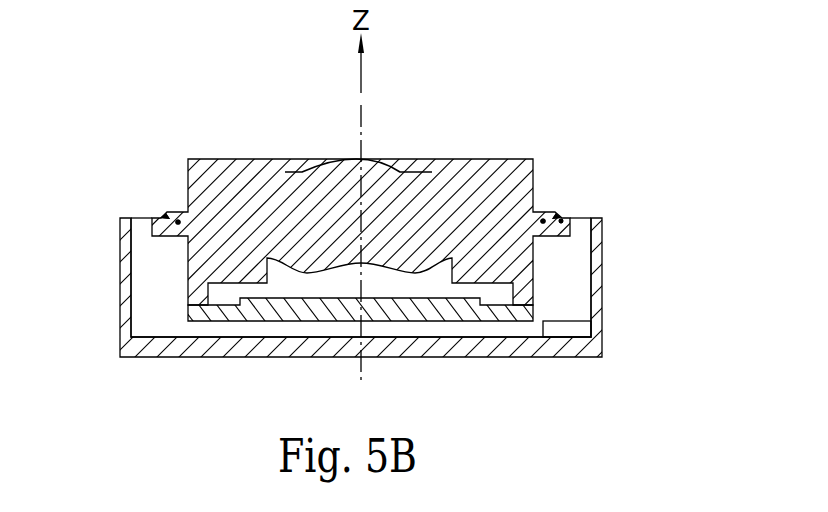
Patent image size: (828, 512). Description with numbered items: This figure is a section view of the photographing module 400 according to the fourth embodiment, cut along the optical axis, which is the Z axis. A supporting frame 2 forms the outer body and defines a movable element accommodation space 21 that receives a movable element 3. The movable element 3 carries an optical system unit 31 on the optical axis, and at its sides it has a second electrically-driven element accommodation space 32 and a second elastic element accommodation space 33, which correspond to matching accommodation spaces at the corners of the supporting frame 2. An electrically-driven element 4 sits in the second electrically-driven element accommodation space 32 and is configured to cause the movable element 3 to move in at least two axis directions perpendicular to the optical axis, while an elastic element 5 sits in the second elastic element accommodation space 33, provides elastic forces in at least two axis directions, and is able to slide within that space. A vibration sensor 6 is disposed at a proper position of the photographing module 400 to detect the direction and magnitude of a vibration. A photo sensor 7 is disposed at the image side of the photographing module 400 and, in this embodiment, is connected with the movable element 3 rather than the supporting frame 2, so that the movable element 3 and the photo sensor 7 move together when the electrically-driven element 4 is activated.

The photographing module 400 is at (660, 71).
The supporting frame 2 is at (601, 296).
The movable element accommodation space 21 is at (568, 264).
The movable element 3 is at (497, 178).
The optical system unit 31 is at (372, 161).
The electrically-driven element 4 is at (160, 220).
The second electrically-driven element accommodation space 32 is at (160, 220).
The elastic element 5 is at (166, 212).
The second elastic element accommodation space 33 is at (166, 212).
The vibration sensor 6 is at (567, 328).
The photo sensor 7 is at (428, 311).